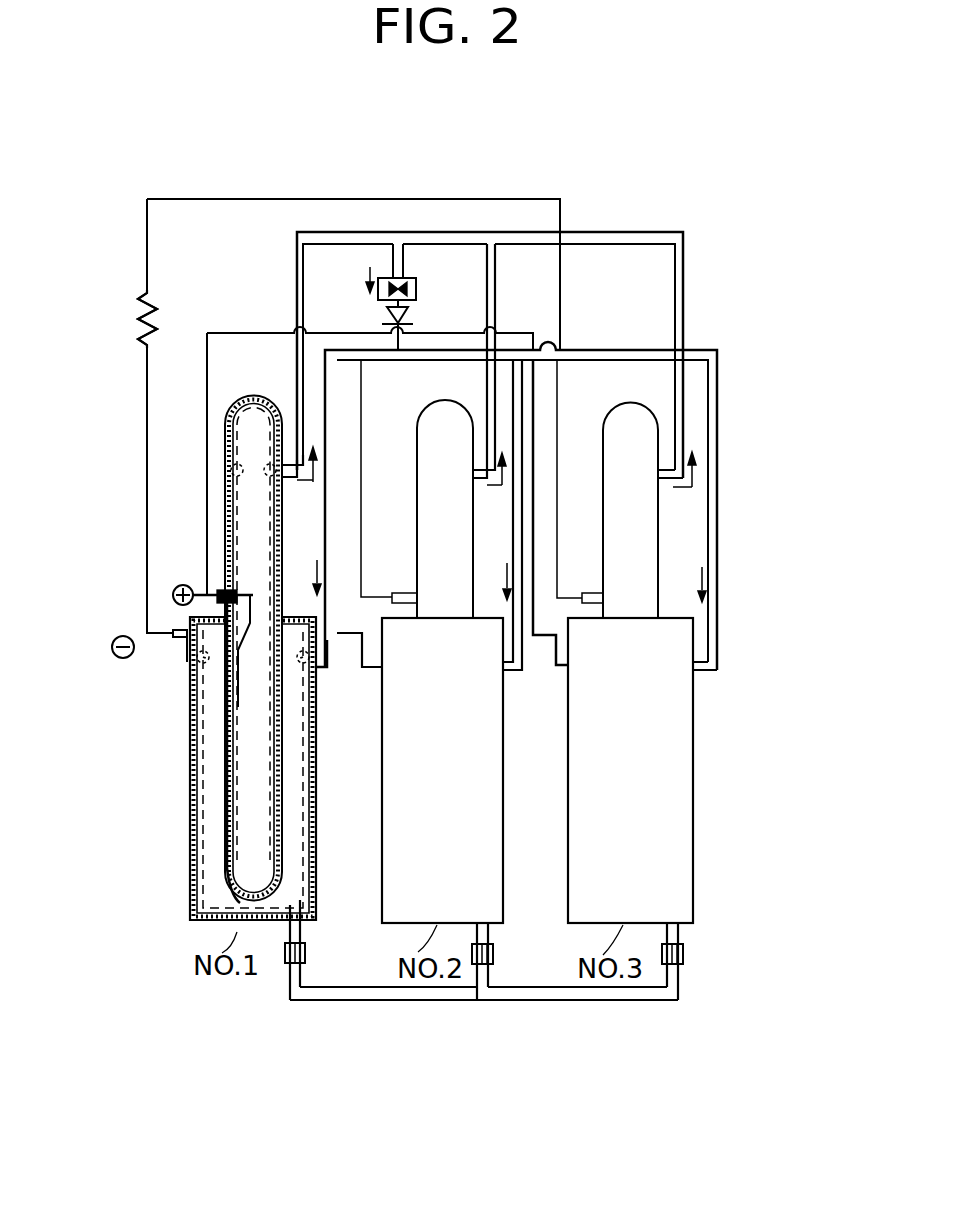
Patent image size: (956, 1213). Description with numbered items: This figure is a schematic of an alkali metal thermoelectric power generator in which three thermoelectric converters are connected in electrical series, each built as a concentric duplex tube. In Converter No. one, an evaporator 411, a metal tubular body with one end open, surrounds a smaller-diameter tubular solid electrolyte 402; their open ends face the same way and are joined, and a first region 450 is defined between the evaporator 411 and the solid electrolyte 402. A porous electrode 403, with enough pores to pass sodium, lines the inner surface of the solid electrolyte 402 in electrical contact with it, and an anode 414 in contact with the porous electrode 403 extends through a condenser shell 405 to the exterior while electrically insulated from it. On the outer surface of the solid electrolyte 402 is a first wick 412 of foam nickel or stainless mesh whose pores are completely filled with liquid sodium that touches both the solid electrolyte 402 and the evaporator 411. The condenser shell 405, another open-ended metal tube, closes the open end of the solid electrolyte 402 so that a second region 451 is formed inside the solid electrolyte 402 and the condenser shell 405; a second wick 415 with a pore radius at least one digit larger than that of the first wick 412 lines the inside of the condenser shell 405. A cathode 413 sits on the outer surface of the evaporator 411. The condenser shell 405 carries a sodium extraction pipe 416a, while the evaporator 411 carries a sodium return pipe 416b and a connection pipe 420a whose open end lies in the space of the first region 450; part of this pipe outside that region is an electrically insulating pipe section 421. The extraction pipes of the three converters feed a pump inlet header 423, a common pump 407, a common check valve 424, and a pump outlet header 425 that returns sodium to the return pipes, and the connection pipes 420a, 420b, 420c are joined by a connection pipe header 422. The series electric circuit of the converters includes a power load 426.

The solid electrolyte 402 is at (205, 812).
The porous electrode 403 is at (250, 765).
The condenser shell 405 is at (227, 452).
The common pump 407 is at (417, 287).
The evaporator 411 is at (217, 920).
The first wick 412 is at (187, 867).
The cathode 413 is at (183, 630).
The anode 414 is at (203, 592).
The second wick 415 is at (227, 507).
The sodium extraction pipe 416a is at (297, 290).
The sodium return pipe 416b is at (347, 647).
The connection pipe 420a is at (290, 985).
The connection pipe 420b is at (483, 975).
The connection pipe 420c is at (673, 977).
The electrically insulating pipe section 421 is at (305, 950).
The connection pipe header 422 is at (372, 1000).
The upper header pipe 423 is at (345, 238).
The common check valve 424 is at (408, 315).
The pump outlet header 425 is at (415, 352).
The power load 426 is at (138, 322).
The first region 450 is at (207, 705).
The second region 451 is at (250, 430).